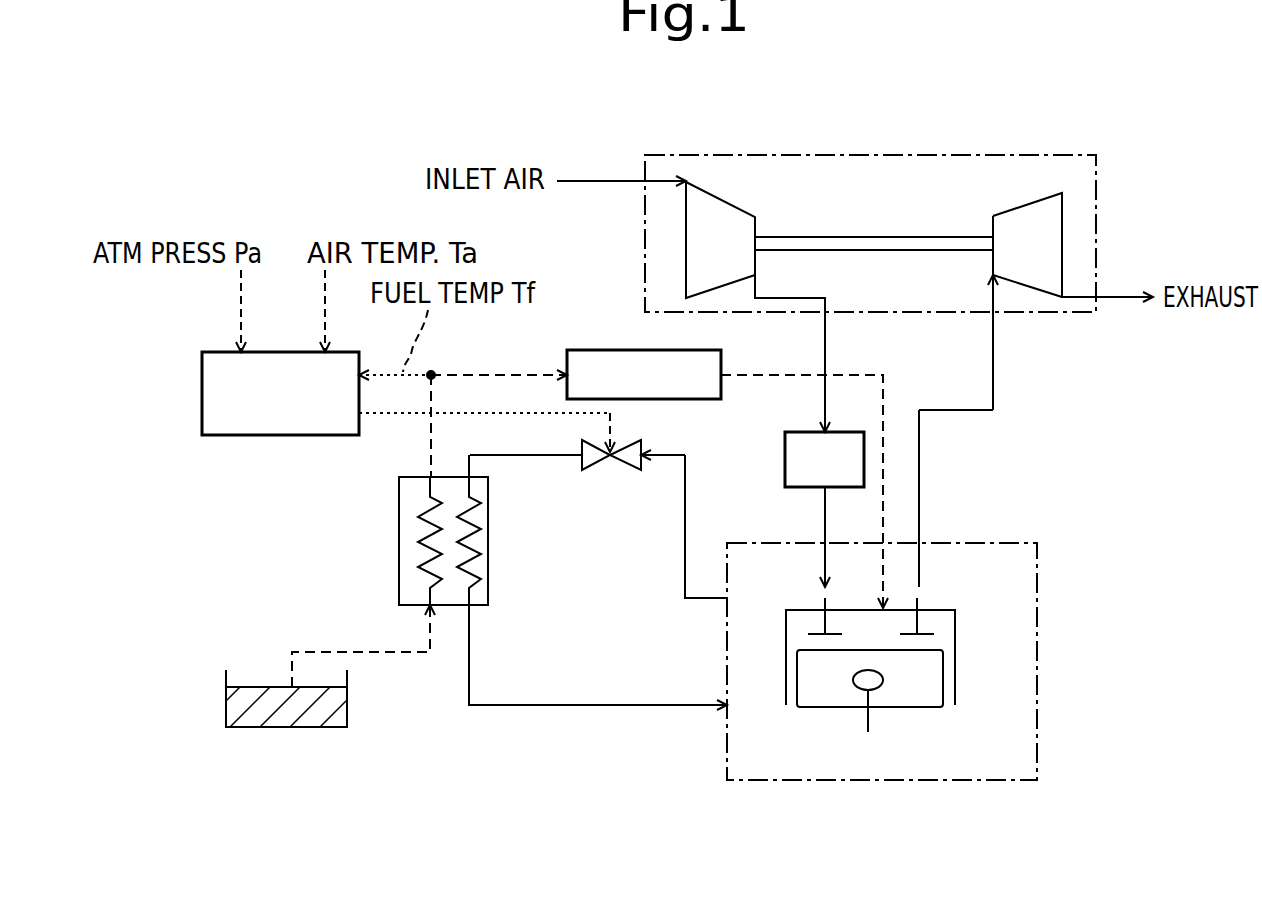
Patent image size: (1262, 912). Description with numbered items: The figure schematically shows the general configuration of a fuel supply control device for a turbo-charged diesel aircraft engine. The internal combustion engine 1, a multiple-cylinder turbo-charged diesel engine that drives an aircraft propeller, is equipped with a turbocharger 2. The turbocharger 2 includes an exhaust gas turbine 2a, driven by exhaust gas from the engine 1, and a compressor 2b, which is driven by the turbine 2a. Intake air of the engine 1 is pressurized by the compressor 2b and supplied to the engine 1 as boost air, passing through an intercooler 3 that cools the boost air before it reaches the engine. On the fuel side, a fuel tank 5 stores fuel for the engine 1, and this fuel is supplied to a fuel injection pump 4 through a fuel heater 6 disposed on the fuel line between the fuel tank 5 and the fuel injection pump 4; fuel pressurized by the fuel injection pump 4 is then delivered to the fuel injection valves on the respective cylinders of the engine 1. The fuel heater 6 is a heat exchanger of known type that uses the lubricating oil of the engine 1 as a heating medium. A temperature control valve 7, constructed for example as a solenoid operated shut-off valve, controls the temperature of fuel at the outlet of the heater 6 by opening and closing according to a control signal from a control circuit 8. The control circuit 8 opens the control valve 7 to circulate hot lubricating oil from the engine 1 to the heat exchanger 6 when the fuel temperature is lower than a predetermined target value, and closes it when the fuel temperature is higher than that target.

The internal combustion engine 1 is at (1037, 557).
The turbocharger 2 is at (1097, 206).
The exhaust gas turbine 2a is at (1062, 230).
The compressor 2b is at (686, 243).
The intercooler 3 is at (787, 432).
The fuel injection pump 4 is at (567, 352).
The fuel tank 5 is at (347, 727).
The fuel heater 6 is at (488, 565).
The temperature control valve 7 is at (605, 468).
The control circuit 8 is at (262, 437).